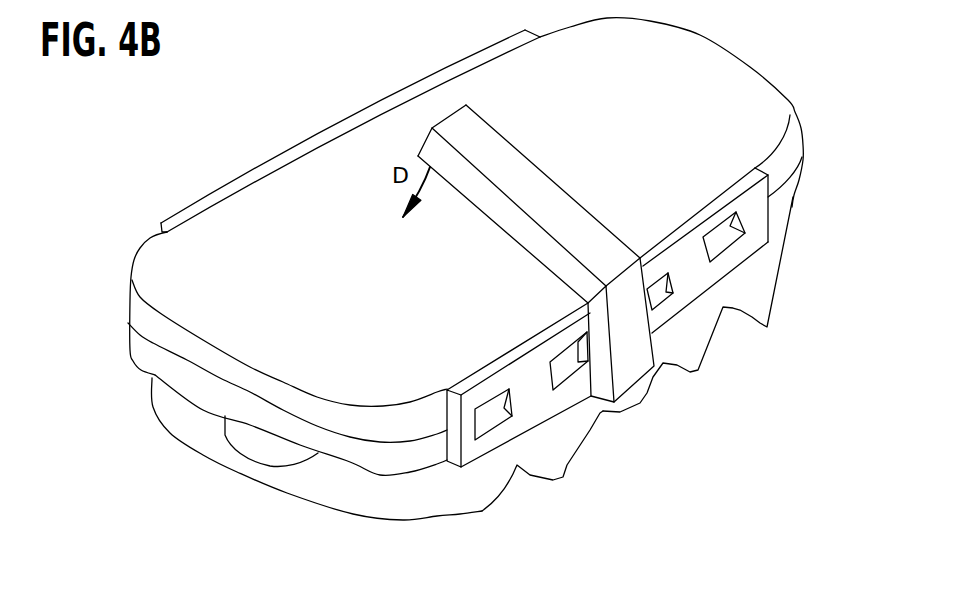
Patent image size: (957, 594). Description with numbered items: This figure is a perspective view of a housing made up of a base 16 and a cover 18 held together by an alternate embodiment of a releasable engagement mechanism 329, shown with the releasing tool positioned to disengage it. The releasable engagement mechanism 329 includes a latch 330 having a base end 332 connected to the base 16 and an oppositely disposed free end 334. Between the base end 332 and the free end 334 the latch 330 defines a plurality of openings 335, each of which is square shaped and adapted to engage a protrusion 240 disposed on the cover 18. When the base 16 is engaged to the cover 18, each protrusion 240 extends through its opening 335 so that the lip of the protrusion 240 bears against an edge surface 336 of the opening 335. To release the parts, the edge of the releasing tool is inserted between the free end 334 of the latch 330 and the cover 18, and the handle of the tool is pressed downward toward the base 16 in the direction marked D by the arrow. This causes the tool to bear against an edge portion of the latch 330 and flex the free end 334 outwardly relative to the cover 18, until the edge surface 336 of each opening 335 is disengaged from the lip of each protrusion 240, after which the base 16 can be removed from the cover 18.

The base 16 is at (745, 97).
The cover 18 is at (591, 443).
The releasable engagement mechanism 329 is at (771, 263).
The latch 330 is at (699, 279).
The base end 332 is at (560, 388).
The free end 334 is at (488, 452).
The opening 335 is at (512, 398).
The edge surface 336 is at (770, 210).
The protrusion 240 is at (492, 417).